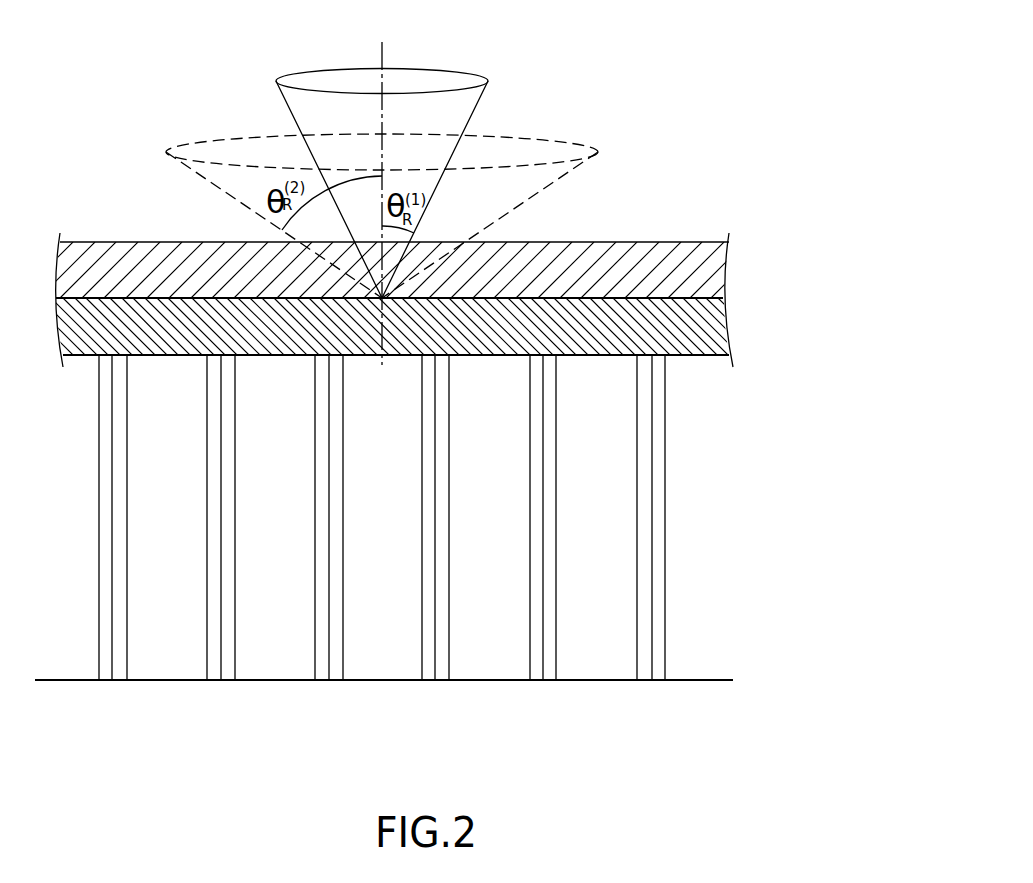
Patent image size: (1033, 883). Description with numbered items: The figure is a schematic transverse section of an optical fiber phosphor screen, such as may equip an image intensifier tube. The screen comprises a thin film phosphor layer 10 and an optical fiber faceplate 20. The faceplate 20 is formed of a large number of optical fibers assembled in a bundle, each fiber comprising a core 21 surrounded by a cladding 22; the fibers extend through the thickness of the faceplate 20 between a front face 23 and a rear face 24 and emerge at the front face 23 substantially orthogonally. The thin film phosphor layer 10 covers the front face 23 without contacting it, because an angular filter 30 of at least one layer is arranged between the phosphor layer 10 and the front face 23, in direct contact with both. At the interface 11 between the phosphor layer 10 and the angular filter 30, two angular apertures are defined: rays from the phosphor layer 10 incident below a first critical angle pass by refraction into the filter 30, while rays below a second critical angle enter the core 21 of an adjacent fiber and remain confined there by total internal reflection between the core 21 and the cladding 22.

The thin film phosphor layer 10 is at (750, 263).
The interface 11 is at (714, 297).
The angular filter 30 is at (739, 335).
The front face 23 is at (703, 356).
The optical fiber faceplate 20 is at (710, 541).
The core 21 is at (485, 653).
The cladding 22 is at (322, 672).
The rear face 24 is at (703, 680).